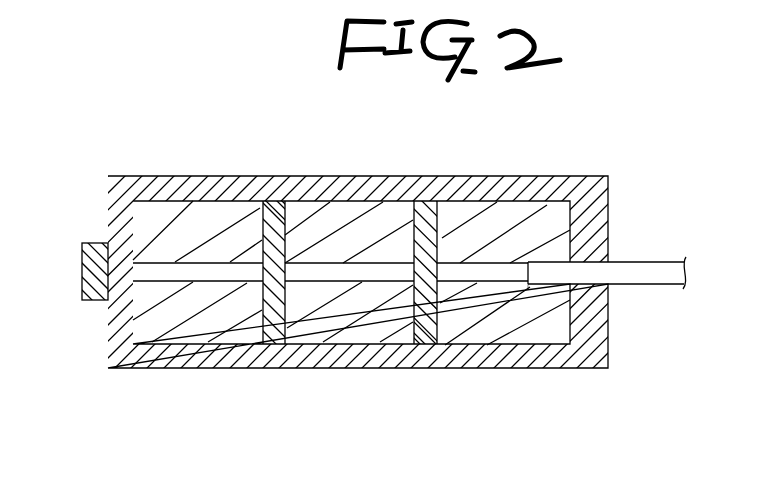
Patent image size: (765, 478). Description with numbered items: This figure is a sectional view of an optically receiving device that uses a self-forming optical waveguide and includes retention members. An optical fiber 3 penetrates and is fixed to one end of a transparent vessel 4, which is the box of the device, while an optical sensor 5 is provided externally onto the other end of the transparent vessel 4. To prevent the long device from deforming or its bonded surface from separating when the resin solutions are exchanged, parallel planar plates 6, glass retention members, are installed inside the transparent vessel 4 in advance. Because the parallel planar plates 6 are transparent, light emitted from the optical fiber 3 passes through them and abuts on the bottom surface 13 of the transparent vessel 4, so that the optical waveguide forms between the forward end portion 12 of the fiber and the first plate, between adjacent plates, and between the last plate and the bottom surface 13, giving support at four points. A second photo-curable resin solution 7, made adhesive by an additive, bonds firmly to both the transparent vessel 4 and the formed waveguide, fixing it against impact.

The optical fiber 3 is at (648, 284).
The transparent vessel 4 is at (289, 188).
The optical sensor 5 is at (82, 255).
The parallel planar plates 6 is at (278, 337).
The second photo-curable resin solution 7 is at (478, 330).
The forward end portion of the optical fiber 12 is at (530, 290).
The bottom surface of the transparent vessel 13 is at (138, 283).